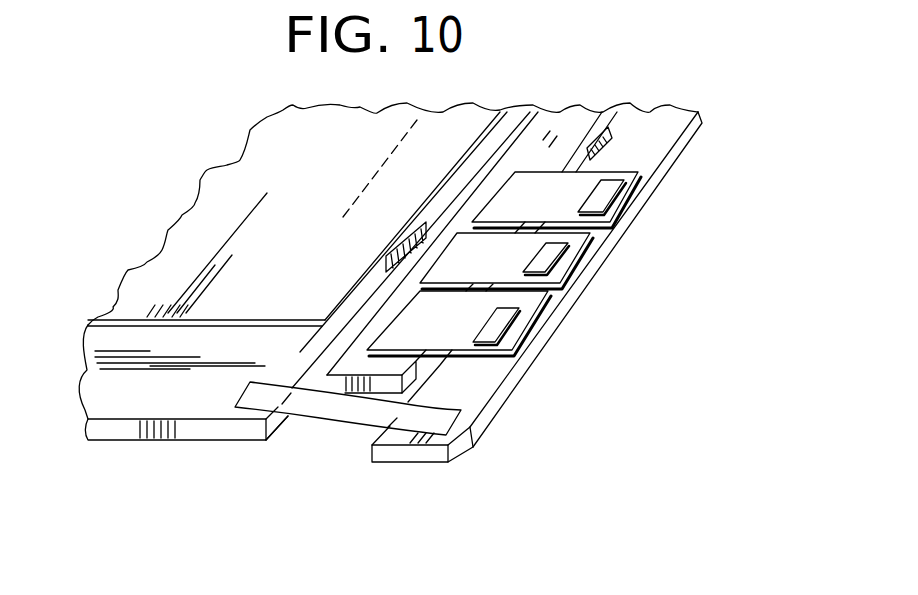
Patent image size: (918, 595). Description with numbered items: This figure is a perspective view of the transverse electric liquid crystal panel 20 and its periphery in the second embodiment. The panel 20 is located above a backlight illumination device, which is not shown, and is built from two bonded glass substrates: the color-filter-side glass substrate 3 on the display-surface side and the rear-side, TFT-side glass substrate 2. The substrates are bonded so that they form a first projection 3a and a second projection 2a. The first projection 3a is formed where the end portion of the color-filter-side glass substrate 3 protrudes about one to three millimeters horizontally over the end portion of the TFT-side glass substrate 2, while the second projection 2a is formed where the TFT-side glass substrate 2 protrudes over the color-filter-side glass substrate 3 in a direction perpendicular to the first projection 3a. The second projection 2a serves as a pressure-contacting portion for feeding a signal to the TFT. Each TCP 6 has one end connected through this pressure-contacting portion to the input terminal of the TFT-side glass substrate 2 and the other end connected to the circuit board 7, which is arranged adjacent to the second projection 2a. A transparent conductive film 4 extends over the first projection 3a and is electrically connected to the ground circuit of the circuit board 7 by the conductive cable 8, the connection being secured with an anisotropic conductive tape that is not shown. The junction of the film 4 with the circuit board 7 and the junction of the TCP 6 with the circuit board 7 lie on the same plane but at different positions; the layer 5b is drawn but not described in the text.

The cover plate 5b is at (250, 197).
The transparent conductive film 4 is at (118, 385).
The color-filter-side glass substrate 3 is at (127, 426).
The first projection 3a is at (195, 398).
The transverse electric liquid crystal panel 20 is at (270, 449).
The TFT-side glass substrate 2 is at (340, 386).
The second projection 2a is at (380, 358).
The TCP 6 is at (617, 198).
The conductive cable 8 is at (443, 420).
The circuit board 7 is at (421, 452).